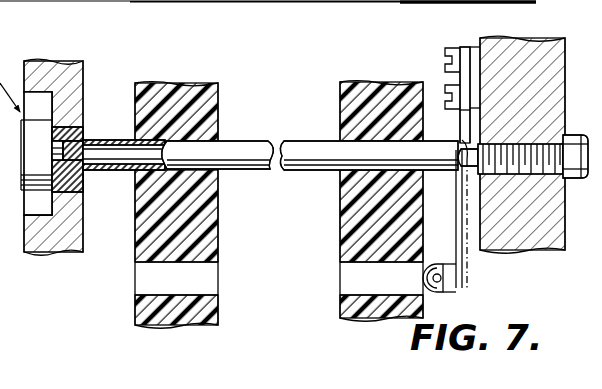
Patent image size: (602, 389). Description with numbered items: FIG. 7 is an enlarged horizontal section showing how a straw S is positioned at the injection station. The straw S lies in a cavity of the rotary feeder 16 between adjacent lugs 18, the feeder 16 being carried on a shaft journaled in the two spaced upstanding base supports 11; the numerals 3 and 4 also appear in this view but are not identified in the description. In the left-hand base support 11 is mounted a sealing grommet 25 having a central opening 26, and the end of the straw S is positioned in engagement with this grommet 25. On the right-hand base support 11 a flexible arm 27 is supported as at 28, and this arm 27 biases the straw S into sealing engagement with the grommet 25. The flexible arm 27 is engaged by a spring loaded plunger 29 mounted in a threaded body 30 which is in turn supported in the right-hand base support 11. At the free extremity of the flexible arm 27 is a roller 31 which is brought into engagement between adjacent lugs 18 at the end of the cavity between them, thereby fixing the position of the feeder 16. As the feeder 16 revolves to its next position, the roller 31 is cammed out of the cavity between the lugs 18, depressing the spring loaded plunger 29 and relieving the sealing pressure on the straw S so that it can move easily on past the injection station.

The tube 3 is at (270, 141).
The conduit fitting 4 is at (14, 208).
The base support 11 is at (62, 247).
The rotary feeder 16 is at (340, 247).
The lugs 18 is at (206, 131).
The sealing grommet 25 is at (67, 132).
The central opening 26 is at (82, 152).
The flexible arm 27 is at (455, 232).
The support 28 is at (467, 53).
The spring loaded plunger 29 is at (468, 146).
The threaded body 30 is at (554, 177).
The roller 31 is at (410, 279).